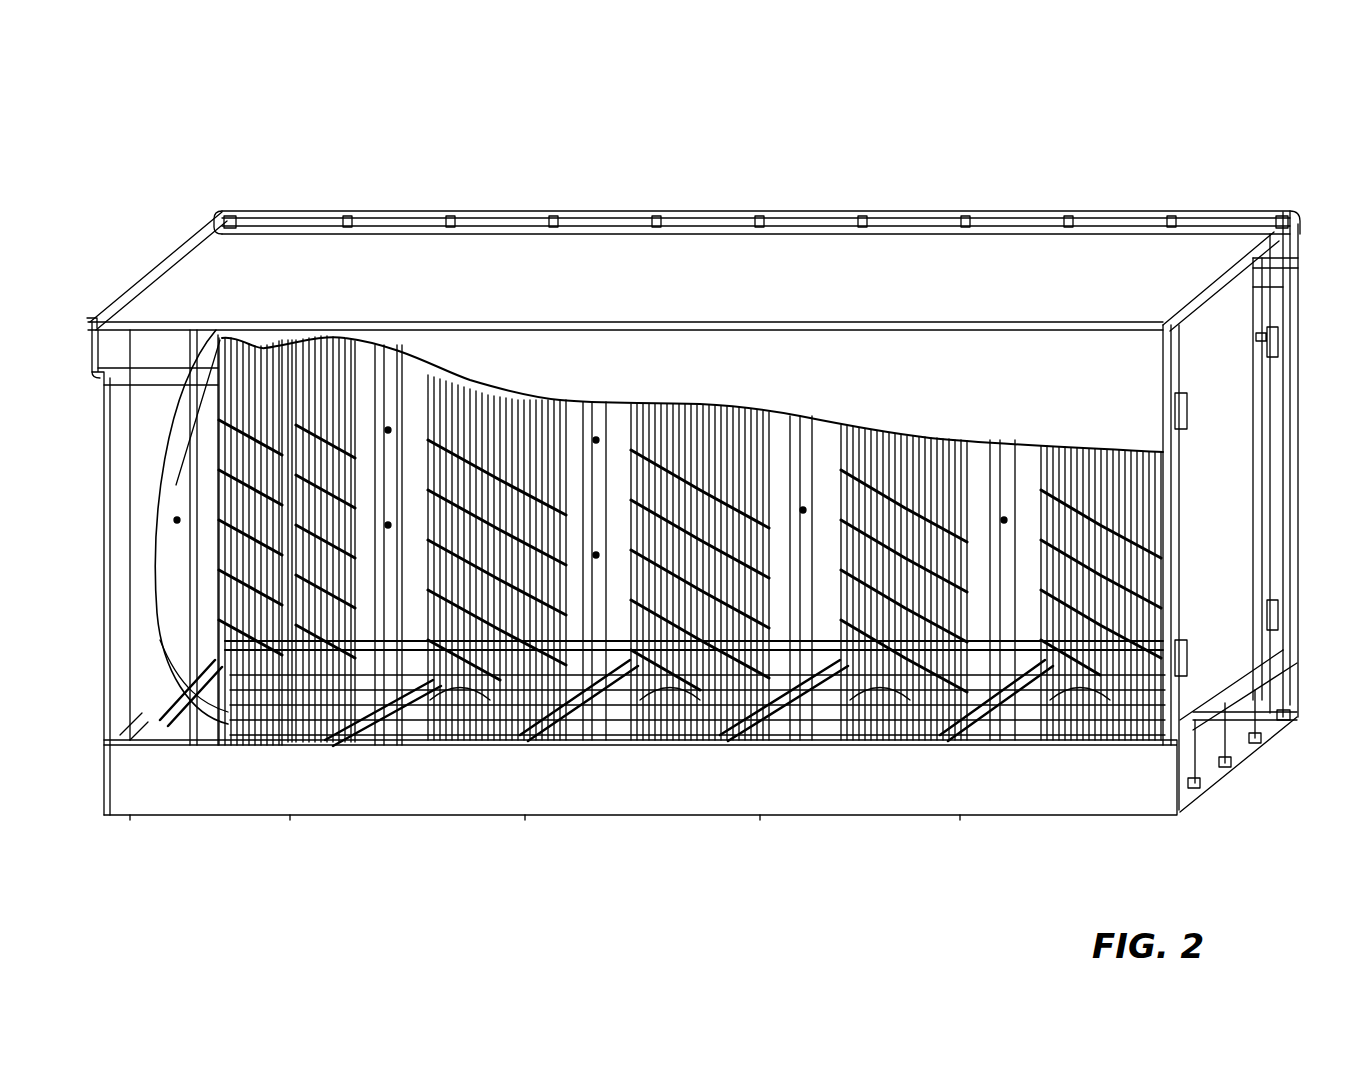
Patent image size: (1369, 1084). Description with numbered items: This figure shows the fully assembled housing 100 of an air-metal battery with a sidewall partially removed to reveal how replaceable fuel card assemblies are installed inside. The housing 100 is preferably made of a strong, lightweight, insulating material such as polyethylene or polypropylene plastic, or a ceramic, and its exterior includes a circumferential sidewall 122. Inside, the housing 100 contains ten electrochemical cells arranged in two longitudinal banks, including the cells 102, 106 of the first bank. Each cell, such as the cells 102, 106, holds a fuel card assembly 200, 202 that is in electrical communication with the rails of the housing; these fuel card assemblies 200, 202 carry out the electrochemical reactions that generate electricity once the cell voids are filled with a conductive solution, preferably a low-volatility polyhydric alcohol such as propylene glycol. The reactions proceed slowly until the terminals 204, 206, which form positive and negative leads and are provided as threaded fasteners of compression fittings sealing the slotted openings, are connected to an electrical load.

The housing 100 is at (596, 156).
The electrochemical cell 102 is at (182, 494).
The electrochemical cell 106 is at (411, 466).
The circumferential sidewall 122 is at (666, 790).
The fuel card assembly 200 is at (232, 588).
The fuel card assembly 202 is at (380, 735).
The terminal 204 is at (1287, 330).
The terminal 206 is at (1232, 448).